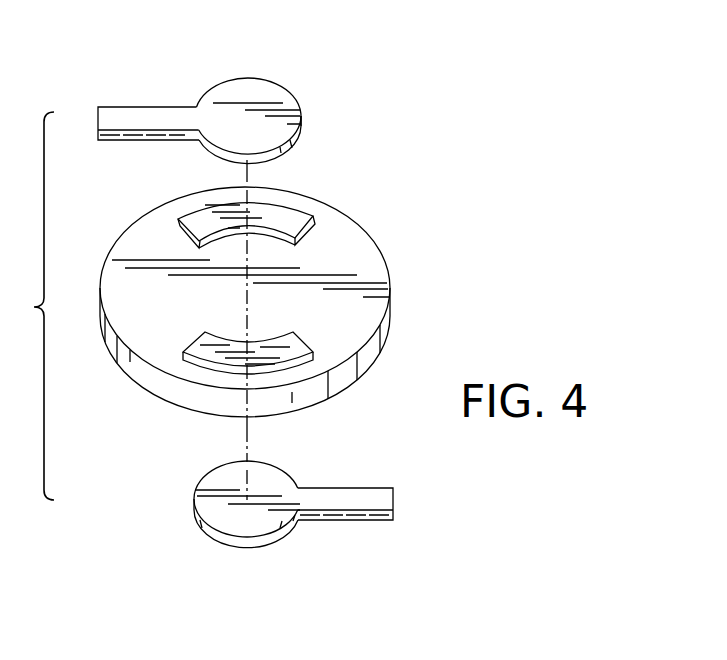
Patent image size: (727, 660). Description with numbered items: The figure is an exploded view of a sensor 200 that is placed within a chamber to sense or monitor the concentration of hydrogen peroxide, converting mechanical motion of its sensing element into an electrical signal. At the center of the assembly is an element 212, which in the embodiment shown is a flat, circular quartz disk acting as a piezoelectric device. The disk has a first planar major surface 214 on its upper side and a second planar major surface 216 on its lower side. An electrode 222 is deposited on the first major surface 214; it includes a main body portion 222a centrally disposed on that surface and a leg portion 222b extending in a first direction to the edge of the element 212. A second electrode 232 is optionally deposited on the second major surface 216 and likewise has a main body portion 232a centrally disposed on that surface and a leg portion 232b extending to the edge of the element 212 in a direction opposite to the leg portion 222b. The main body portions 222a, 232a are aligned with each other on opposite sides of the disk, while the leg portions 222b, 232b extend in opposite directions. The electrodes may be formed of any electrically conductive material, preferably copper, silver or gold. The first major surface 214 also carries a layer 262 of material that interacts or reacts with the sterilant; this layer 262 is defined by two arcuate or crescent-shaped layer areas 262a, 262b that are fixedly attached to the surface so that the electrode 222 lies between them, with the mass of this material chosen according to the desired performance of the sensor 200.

The sensor 200 is at (460, 183).
The element 212 is at (383, 238).
The first planar major surface 214 is at (360, 317).
The second planar major surface 216 is at (318, 405).
The electrode 222 is at (305, 100).
The main body portion 222a is at (246, 92).
The leg portion 222b is at (133, 115).
The electrode 232 is at (210, 535).
The main body portion 232a is at (250, 527).
The leg portion 232b is at (354, 504).
The layer 262 is at (300, 212).
The arcuate layer area 262a is at (193, 217).
The arcuate layer area 262b is at (208, 355).